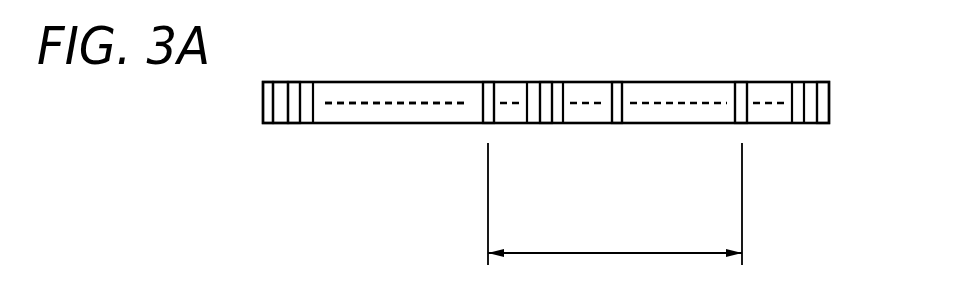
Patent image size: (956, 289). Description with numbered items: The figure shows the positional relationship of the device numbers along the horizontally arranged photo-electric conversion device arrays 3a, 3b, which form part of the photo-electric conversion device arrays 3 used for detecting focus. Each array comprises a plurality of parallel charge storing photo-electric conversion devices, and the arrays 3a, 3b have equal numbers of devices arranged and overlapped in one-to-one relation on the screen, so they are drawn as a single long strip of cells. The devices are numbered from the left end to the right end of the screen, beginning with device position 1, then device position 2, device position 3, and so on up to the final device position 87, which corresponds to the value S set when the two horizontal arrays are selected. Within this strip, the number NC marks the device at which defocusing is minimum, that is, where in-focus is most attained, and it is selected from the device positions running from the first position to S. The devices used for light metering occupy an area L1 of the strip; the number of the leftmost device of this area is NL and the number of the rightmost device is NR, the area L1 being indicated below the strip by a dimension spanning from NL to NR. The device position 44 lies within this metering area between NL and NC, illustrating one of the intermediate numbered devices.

The device position 1 is at (269, 125).
The device position 2 is at (283, 125).
The photo-electric conversion device arrays 3 is at (293, 125).
The photo-electric conversion device array 3a is at (402, 90).
The photo-electric conversion device array 3b is at (405, 72).
The number of the leftmost device NL is at (488, 125).
The device position 44 is at (546, 125).
The number of the in-focus device NC is at (617, 125).
The number of the rightmost device NR is at (742, 125).
The device position 87 is at (823, 125).
The area of the devices used for light metering L1 is at (615, 204).